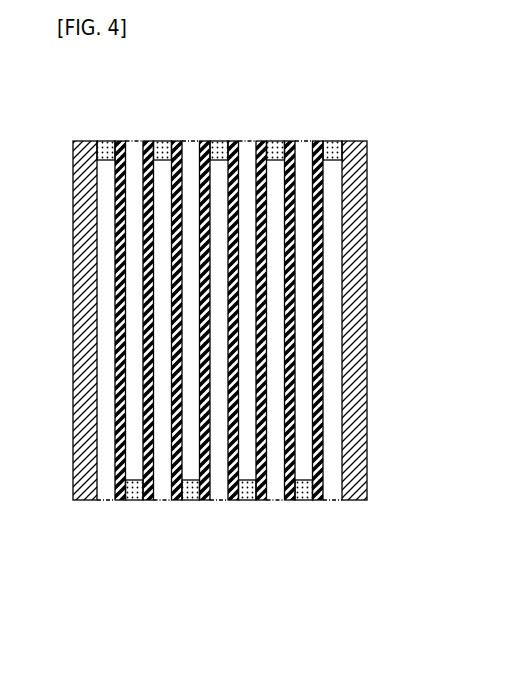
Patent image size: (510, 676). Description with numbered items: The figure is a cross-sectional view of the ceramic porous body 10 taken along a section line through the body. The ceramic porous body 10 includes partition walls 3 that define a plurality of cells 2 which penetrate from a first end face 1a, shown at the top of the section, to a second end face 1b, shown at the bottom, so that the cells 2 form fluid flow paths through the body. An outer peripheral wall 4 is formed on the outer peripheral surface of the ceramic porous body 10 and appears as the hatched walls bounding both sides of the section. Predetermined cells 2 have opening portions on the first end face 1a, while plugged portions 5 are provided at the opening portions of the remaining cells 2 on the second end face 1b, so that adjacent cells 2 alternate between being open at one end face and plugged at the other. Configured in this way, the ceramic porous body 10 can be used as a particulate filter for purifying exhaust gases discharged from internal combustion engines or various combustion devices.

The ceramic porous body 10 is at (225, 355).
The first end face 1a is at (245, 141).
The second end face 1b is at (220, 500).
The cell 2 is at (122, 142).
The partition wall 3 is at (191, 142).
The outer peripheral wall 4 is at (354, 141).
The plugged portion 5 is at (162, 142).